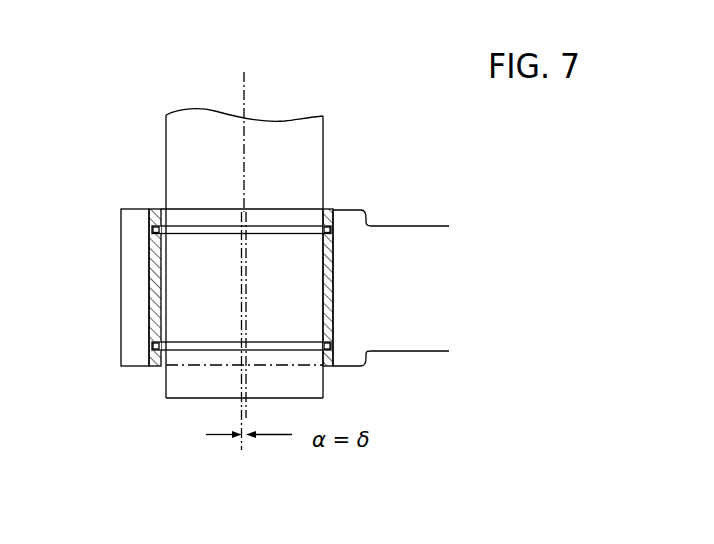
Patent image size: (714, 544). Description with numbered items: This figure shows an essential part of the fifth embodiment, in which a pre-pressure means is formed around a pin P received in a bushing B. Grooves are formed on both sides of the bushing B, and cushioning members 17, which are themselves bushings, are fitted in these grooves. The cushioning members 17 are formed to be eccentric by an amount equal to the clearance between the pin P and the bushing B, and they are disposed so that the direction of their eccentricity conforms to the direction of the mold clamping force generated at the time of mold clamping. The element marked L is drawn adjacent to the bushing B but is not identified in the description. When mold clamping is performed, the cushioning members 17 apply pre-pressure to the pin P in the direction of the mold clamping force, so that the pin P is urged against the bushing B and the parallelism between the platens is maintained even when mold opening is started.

The cushioning member 17 is at (162, 224).
The pin P is at (180, 118).
The bushing B is at (149, 277).
The link member L is at (394, 237).